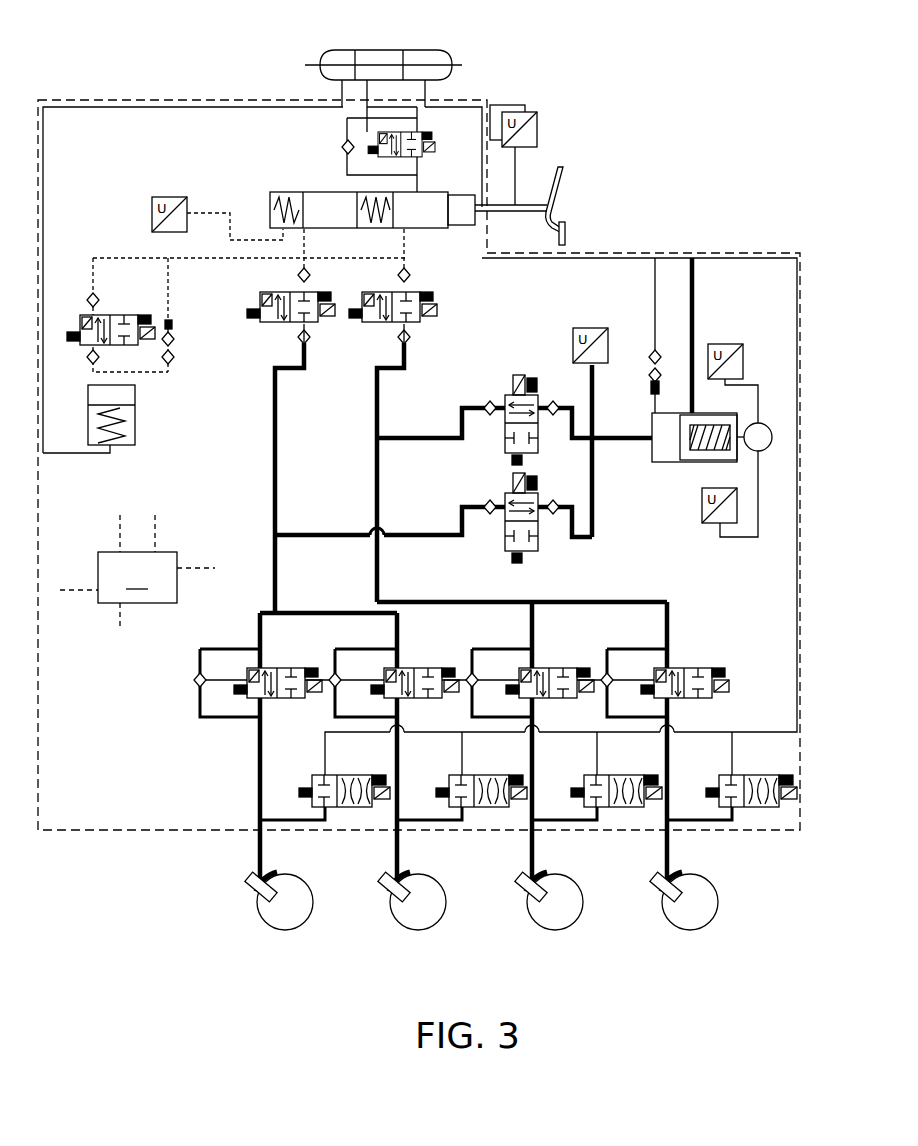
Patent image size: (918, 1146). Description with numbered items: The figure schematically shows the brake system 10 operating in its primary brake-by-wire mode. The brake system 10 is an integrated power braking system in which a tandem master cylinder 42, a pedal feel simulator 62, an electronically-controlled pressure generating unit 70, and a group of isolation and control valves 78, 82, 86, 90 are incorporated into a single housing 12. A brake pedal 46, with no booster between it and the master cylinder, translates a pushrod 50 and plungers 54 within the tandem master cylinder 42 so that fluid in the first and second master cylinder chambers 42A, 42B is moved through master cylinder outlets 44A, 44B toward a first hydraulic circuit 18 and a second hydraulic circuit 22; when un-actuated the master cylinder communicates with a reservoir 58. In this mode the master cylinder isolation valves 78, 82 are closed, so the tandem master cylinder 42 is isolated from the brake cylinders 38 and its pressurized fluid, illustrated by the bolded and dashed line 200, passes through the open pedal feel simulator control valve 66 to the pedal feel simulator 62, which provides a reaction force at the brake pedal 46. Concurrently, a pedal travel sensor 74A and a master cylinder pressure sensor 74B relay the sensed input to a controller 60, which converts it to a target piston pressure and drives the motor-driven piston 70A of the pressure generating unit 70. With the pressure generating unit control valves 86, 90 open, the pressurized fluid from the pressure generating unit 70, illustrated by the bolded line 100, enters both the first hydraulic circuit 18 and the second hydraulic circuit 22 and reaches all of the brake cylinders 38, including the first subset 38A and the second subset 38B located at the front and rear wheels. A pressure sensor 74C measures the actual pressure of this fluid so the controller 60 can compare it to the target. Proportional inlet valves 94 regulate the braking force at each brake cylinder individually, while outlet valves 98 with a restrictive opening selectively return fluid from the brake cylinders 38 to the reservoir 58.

The brake system 10 is at (637, 158).
The housing 12 is at (670, 253).
The first hydraulic circuit 18 is at (360, 390).
The second hydraulic circuit 22 is at (250, 465).
The brake cylinders 38 is at (467, 933).
The first subset of brake cylinders 38A is at (525, 900).
The second subset of brake cylinders 38B is at (255, 900).
The tandem master cylinder 42 is at (377, 213).
The first master cylinder chamber 42A is at (367, 229).
The second master cylinder chamber 42B is at (270, 205).
The first master cylinder outlet 44A is at (378, 229).
The second master cylinder outlet 44B is at (285, 234).
The brake pedal 46 is at (566, 227).
The pushrod 50 is at (500, 212).
The plungers 54 is at (314, 215).
The reservoir 58 is at (410, 57).
The controller 60 is at (137, 572).
The pedal feel simulator 62 is at (135, 400).
The pedal feel simulator control valve 66 is at (97, 316).
The electronically-controlled pressure generating unit 70 is at (709, 446).
The motor-driven piston 70A is at (705, 412).
The pedal travel sensor 74A is at (540, 118).
The master cylinder pressure sensor 74B is at (165, 197).
The pressure sensor 74C is at (572, 340).
The master cylinder isolation valve 78 is at (420, 327).
The master cylinder isolation valve 82 is at (318, 327).
The pressure generating unit control valve 86 is at (500, 400).
The pressure generating unit control valve 90 is at (503, 546).
The inlet valves 94 is at (287, 667).
The outlet valves 98 is at (337, 775).
The bolded lines 100 is at (272, 442).
The bolded and dashed lines 200 is at (140, 255).